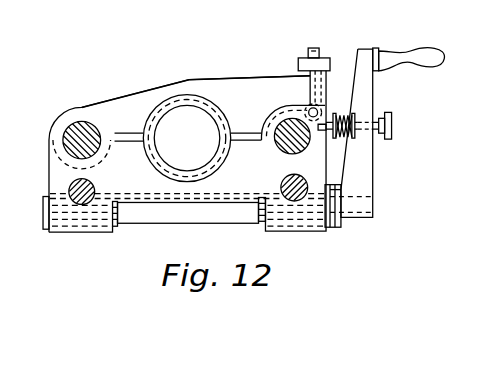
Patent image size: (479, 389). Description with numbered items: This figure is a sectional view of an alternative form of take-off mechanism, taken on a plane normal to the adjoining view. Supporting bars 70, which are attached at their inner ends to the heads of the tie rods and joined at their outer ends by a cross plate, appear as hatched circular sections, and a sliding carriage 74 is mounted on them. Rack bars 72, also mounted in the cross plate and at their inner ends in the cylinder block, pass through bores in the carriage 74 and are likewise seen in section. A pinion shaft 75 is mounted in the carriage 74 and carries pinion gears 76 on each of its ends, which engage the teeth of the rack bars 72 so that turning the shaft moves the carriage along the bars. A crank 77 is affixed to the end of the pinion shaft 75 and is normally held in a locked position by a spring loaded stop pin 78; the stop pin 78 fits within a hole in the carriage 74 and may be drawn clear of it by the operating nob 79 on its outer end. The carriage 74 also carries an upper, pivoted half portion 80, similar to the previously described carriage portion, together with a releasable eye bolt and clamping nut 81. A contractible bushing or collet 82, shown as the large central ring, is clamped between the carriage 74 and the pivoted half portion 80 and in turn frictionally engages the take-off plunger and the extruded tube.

The supporting bars 70 is at (73, 123).
The rack bars 72 is at (88, 188).
The sliding carriage 74 is at (218, 177).
The pinion shaft 75 is at (170, 210).
The pinion gears 76 is at (112, 220).
The crank 77 is at (362, 150).
The spring loaded stop pin 78 is at (347, 120).
The operating nob 79 is at (389, 118).
The upper pivoted half portion 80 is at (145, 83).
The releasable eye bolt and clamping nut 81 is at (326, 58).
The contractible bushing or collet 82 is at (199, 100).